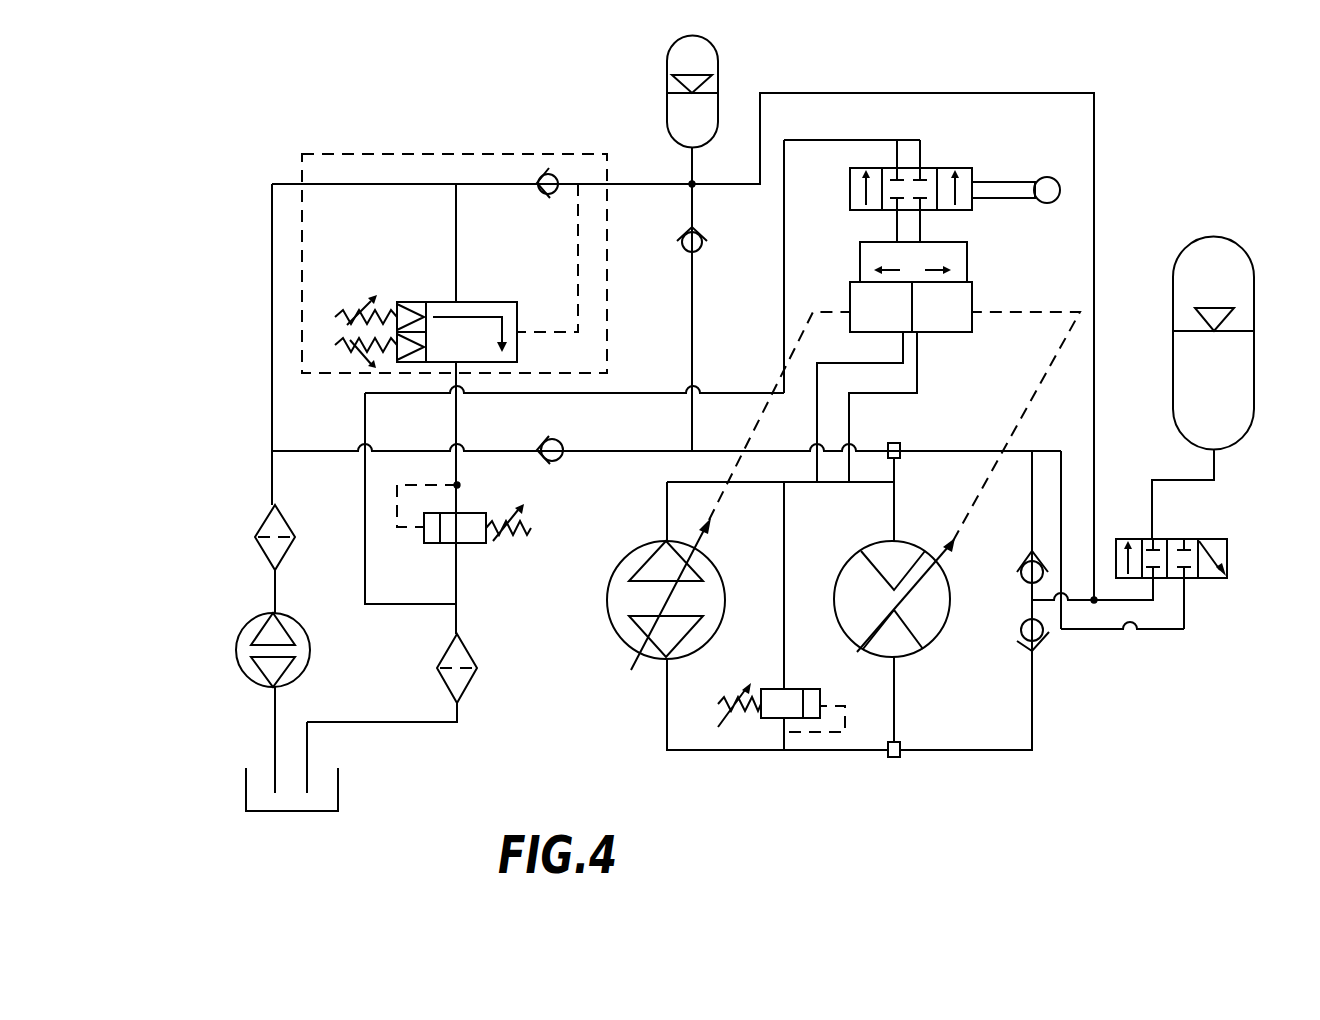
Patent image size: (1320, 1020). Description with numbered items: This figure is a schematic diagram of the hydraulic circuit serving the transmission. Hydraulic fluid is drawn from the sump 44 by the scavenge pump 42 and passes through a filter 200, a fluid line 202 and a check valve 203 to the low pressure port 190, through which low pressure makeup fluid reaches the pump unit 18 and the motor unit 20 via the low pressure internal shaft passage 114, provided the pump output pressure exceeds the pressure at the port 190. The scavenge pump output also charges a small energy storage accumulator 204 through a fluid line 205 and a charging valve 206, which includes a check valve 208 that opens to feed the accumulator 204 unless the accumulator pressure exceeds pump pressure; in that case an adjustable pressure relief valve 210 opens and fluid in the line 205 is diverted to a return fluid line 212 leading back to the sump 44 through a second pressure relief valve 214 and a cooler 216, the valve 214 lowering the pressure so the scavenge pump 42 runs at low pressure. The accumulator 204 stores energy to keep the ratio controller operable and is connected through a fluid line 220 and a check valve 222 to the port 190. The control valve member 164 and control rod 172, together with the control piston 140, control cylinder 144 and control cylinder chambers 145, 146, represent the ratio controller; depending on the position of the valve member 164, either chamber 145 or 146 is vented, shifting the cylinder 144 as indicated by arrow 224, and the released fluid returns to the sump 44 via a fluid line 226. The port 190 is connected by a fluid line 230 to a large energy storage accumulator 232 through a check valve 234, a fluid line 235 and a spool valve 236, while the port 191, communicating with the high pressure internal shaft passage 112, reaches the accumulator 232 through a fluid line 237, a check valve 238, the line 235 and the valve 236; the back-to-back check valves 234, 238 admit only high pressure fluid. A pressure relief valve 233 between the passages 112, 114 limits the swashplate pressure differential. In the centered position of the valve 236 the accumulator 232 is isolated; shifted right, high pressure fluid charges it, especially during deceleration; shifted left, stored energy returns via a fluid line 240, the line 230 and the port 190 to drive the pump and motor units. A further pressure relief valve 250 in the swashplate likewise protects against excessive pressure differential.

The pump unit 18 is at (607, 633).
The motor unit 20 is at (943, 644).
The scavenge pump 42 is at (310, 650).
The sump 44 is at (331, 791).
The high pressure internal shaft passage 112 is at (730, 751).
The low pressure internal shaft passage 114 is at (760, 483).
The control piston 140 is at (905, 318).
The control cylinder 144 is at (978, 290).
The control cylinder chamber 145 is at (902, 323).
The control cylinder chamber 146 is at (963, 323).
The control valve member 164 is at (945, 165).
The control rod 172 is at (1015, 182).
The low pressure port 190 is at (899, 440).
The port 191 is at (897, 757).
The filter 200 is at (265, 548).
The fluid line 202 is at (507, 451).
The check valve 203 is at (556, 444).
The small energy storage accumulator 204 is at (668, 110).
The fluid line 205 is at (272, 373).
The charging valve 206 is at (388, 154).
The check valve 208 is at (558, 197).
The adjustable pressure relief valve 210 is at (490, 308).
The return fluid line 212 is at (456, 414).
The second pressure relief valve 214 is at (468, 532).
The cooler 216 is at (445, 681).
The fluid line 220 is at (692, 328).
The check valve 222 is at (683, 247).
The arrow 224 is at (903, 267).
The fluid line 226 is at (663, 393).
The fluid line 230 is at (976, 452).
The large energy storage accumulator 232 is at (1224, 250).
The pressure relief valve 233 is at (777, 684).
The check valve 234 is at (1021, 570).
The fluid line 235 is at (1134, 633).
The spool valve 236 is at (1188, 530).
The fluid line 237 is at (1002, 750).
The check valve 238 is at (1025, 642).
The fluid line 240 is at (1089, 635).
The pressure relief valve 250 is at (880, 645).